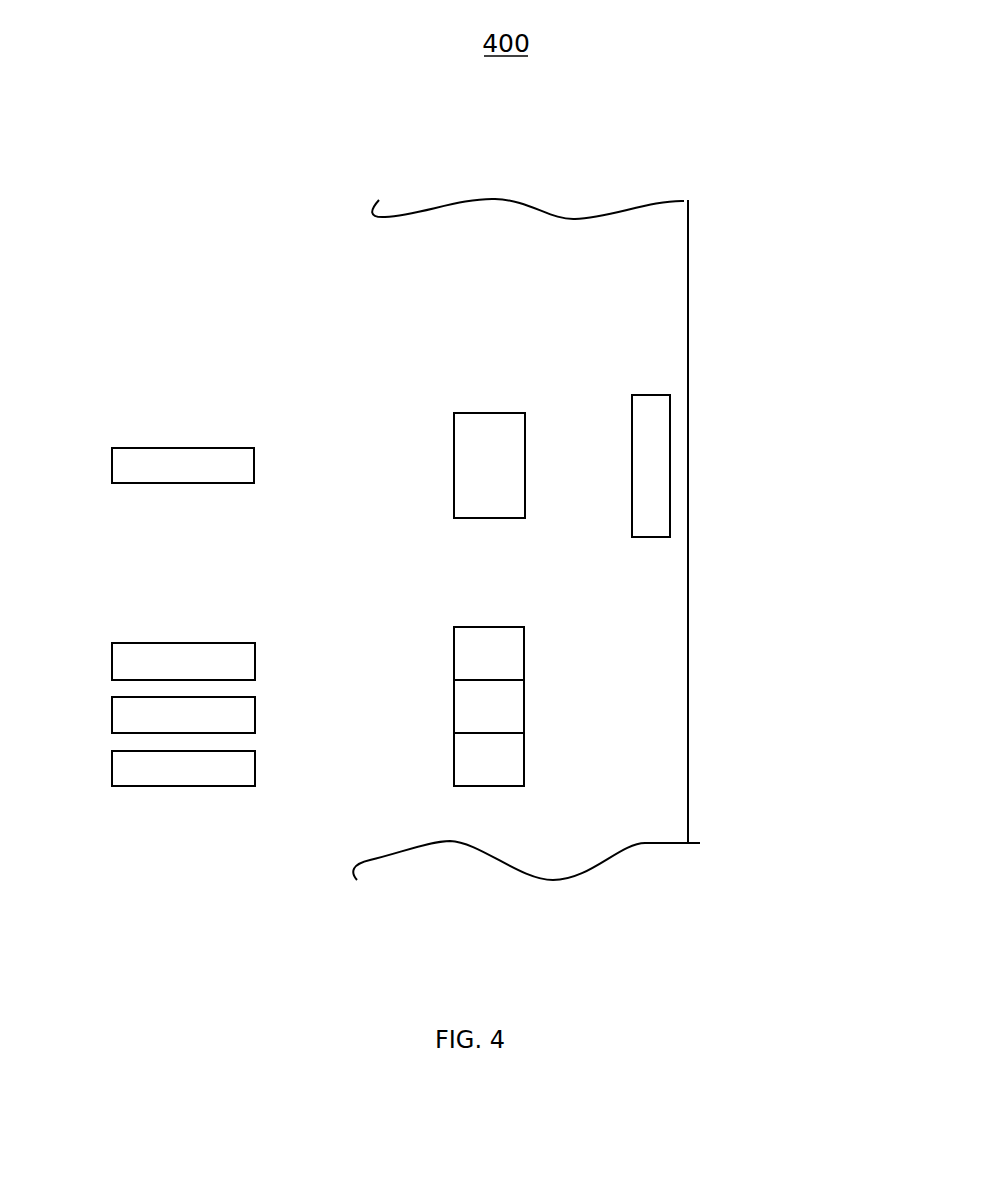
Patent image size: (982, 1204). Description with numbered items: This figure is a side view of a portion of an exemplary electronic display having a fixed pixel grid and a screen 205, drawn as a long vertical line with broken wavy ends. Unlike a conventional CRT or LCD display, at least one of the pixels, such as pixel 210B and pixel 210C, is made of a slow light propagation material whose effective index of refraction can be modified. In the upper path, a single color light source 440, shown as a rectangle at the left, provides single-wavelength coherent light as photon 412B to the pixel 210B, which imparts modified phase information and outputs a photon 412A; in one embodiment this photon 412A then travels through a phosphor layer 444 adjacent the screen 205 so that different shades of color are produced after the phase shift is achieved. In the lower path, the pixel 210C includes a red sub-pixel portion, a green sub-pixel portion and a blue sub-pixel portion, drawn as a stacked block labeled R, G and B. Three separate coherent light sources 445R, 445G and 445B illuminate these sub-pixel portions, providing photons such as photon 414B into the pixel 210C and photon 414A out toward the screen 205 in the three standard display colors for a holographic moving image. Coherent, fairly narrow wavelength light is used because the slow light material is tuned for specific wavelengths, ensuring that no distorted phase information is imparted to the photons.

The screen 205 is at (704, 233).
The phosphor layer 444 is at (651, 412).
The photon 412A is at (560, 465).
The photon 414A is at (632, 698).
The single color light source 440 is at (163, 435).
The photon 412B is at (440, 445).
The pixel 210B is at (506, 430).
The red coherent light source 445R is at (132, 663).
The green coherent light source 445G is at (132, 715).
The blue coherent light source 445B is at (132, 769).
The photon 414B is at (440, 643).
The pixel 210C is at (454, 763).